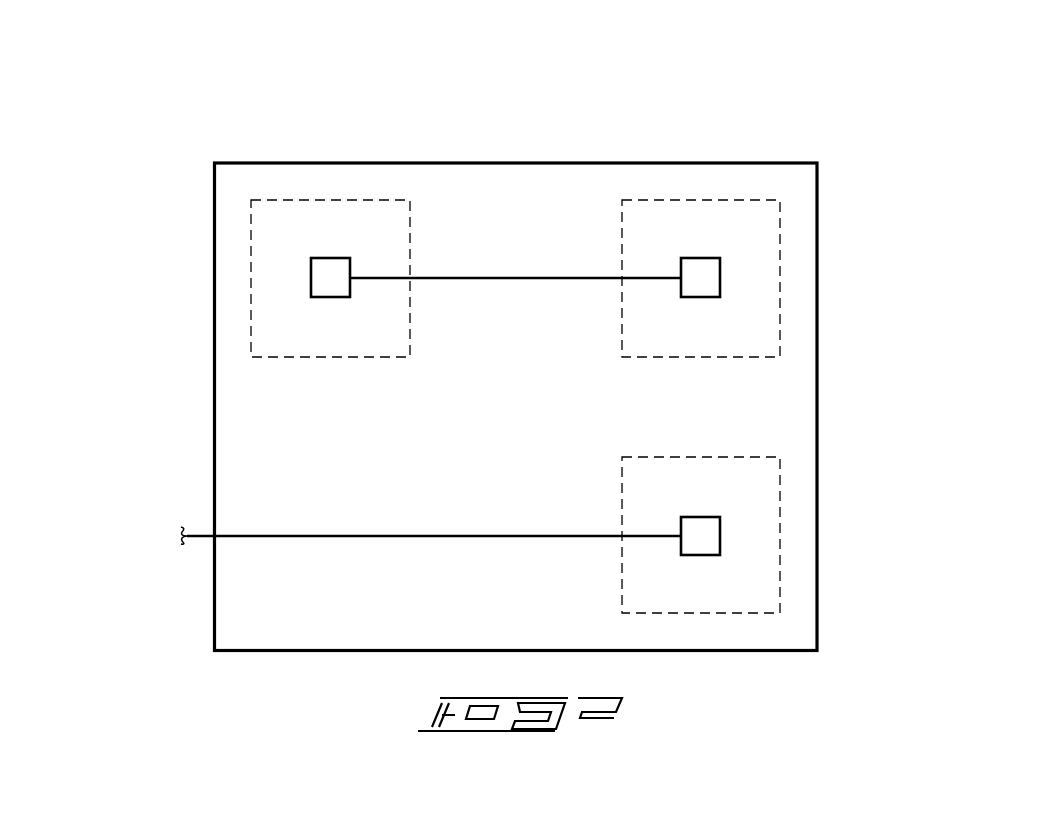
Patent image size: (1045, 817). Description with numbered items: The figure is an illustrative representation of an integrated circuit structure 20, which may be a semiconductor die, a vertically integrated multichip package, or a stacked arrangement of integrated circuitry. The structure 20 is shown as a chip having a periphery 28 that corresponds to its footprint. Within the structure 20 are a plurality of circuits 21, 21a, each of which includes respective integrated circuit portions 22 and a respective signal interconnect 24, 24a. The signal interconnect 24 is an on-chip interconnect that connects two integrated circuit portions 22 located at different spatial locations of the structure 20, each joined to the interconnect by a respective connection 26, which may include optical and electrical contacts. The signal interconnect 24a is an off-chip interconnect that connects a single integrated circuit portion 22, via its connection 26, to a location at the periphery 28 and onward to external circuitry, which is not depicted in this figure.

The integrated circuit structure 20 is at (840, 118).
The circuit 21 is at (785, 268).
The circuit 21a is at (785, 533).
The integrated circuit portion 22 is at (292, 357).
The signal interconnect 24 is at (497, 279).
The signal interconnect 24a is at (383, 537).
The connection 26 is at (331, 258).
The periphery 28 is at (515, 161).